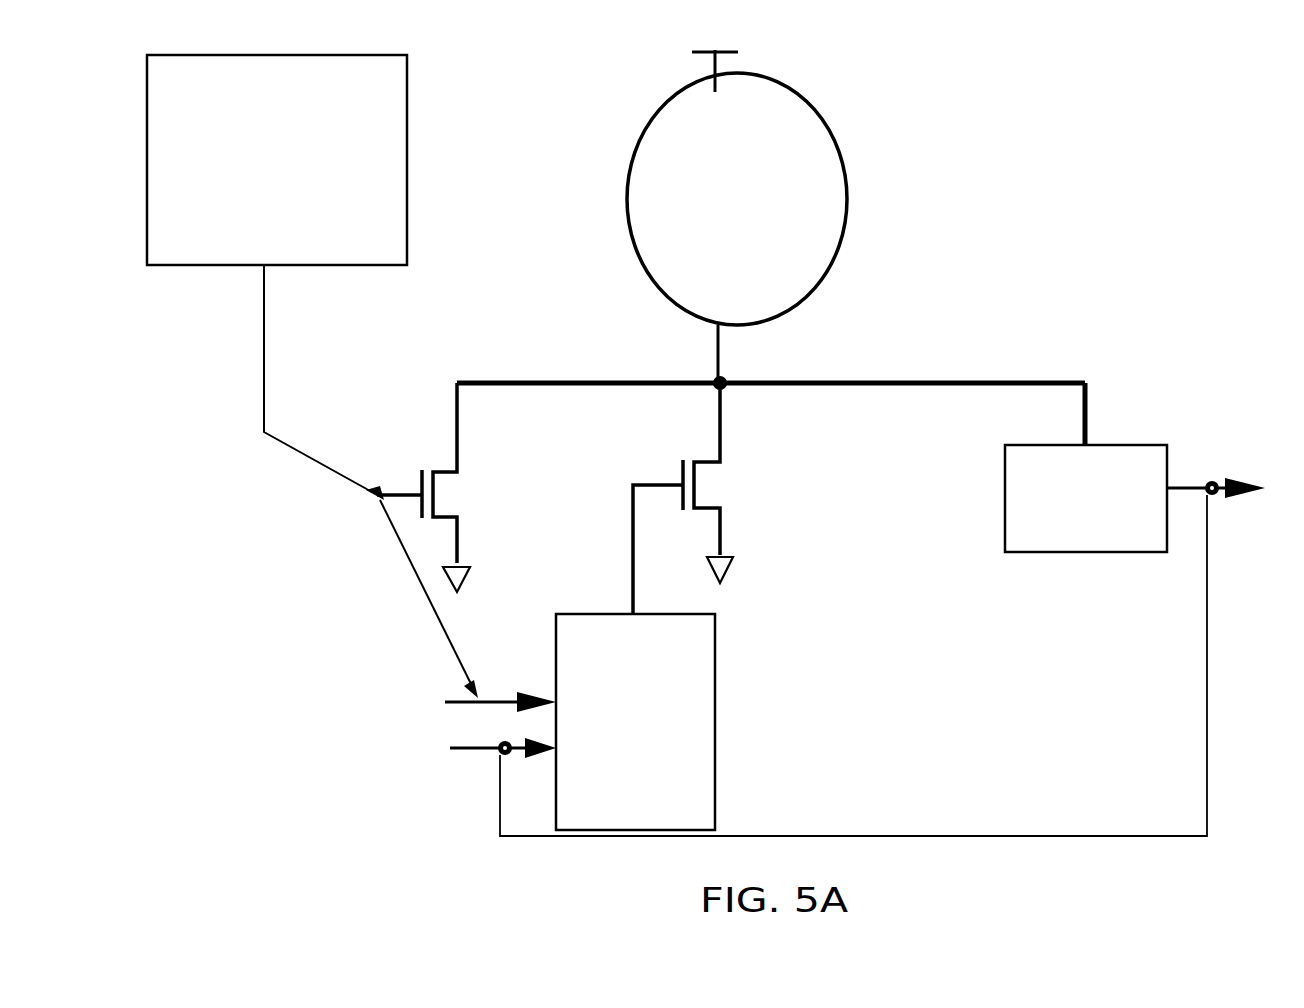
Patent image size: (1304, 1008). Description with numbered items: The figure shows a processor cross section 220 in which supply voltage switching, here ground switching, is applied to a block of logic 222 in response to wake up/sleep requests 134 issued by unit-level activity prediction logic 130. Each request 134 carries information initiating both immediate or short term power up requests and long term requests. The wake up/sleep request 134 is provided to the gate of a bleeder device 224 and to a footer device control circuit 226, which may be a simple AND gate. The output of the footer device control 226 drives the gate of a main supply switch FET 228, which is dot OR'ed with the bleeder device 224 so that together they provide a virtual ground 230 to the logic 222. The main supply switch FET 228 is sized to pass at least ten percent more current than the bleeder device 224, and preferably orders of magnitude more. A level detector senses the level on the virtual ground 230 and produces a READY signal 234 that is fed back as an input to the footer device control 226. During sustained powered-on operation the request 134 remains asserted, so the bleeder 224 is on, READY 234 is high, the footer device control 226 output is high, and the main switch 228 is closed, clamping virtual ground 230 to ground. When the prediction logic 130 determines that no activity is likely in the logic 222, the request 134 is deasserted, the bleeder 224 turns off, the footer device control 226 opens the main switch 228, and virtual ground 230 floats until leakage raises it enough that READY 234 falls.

The unit-level activity prediction logic 130 is at (353, 107).
The wake up/sleep request 134 is at (352, 481).
The processor cross section 220 is at (1020, 552).
The logic 222 is at (830, 174).
The bleeder device 224 is at (430, 456).
The footer device control circuit 226 is at (711, 717).
The main supply switch FET 228 is at (666, 457).
The virtual ground 230 is at (794, 361).
The READY signal 234 is at (853, 665).